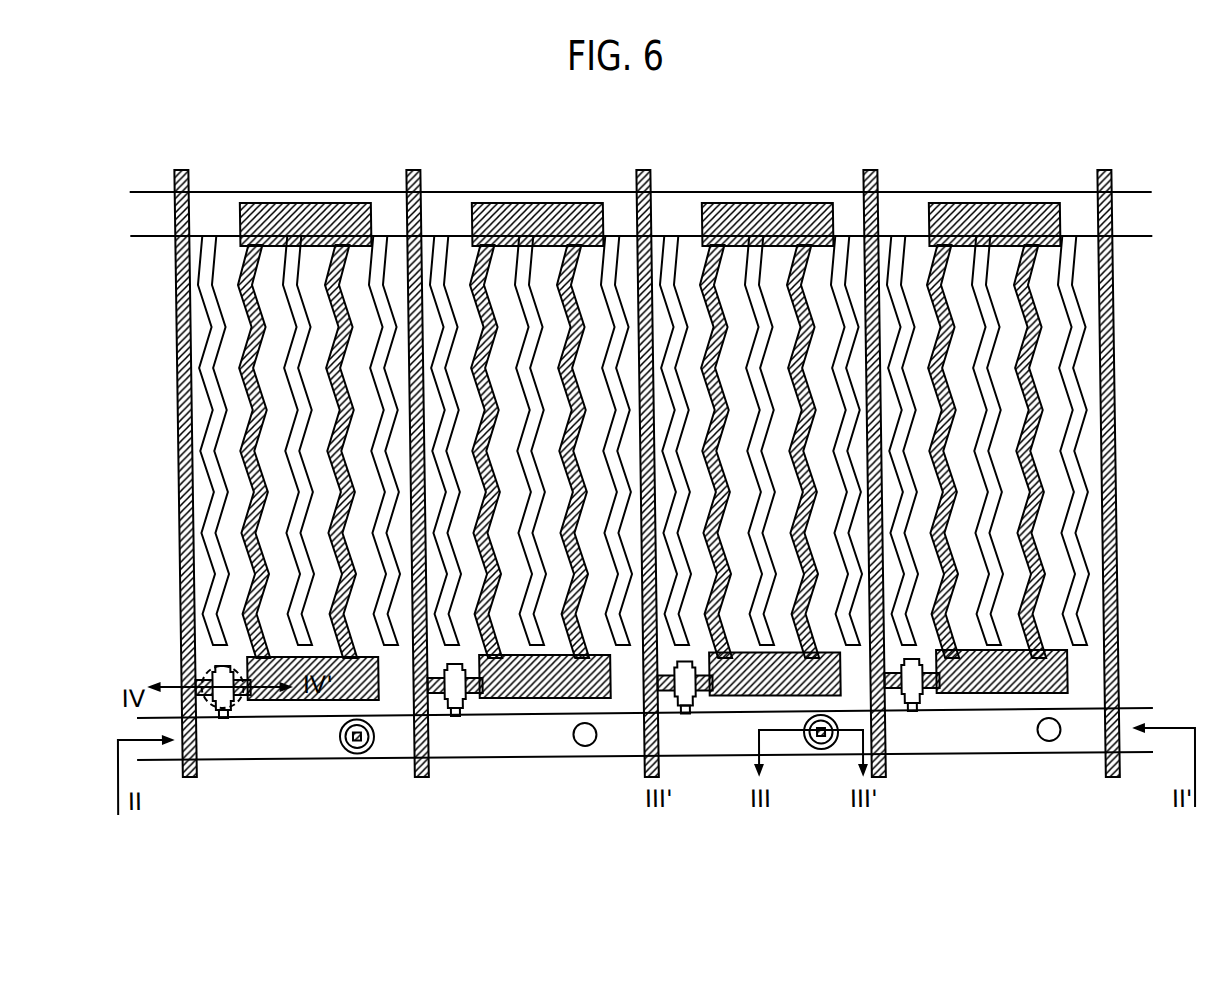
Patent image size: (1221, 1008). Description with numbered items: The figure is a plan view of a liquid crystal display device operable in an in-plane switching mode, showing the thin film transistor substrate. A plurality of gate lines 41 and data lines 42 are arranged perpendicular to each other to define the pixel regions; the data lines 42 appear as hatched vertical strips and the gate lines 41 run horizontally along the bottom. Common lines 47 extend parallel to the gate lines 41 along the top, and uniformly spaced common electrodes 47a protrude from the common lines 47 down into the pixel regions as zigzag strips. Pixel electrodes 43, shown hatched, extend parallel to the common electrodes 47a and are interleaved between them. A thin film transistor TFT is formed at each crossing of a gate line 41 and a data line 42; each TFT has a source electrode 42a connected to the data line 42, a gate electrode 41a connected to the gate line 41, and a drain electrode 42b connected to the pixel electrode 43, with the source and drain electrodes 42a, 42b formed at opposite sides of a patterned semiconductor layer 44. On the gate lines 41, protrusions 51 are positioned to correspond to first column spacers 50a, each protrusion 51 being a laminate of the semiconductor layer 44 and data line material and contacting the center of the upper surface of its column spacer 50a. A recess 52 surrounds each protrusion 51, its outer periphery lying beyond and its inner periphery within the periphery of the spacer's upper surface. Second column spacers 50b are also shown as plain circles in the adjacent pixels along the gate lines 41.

The gate line 41 is at (378, 735).
The gate electrode 41a is at (215, 712).
The data line 42 is at (185, 168).
The source electrode 42a is at (202, 682).
The drain electrode 42b is at (237, 707).
The pixel electrode 43 is at (250, 383).
The semiconductor layer 44 is at (206, 677).
The common line 47 is at (383, 211).
The common electrode 47a is at (299, 324).
The first column spacer 50a is at (338, 747).
The second column spacer 50b is at (572, 746).
The protrusion 51 is at (352, 748).
The recess 52 is at (330, 743).
The thin film transistor TFT is at (206, 668).